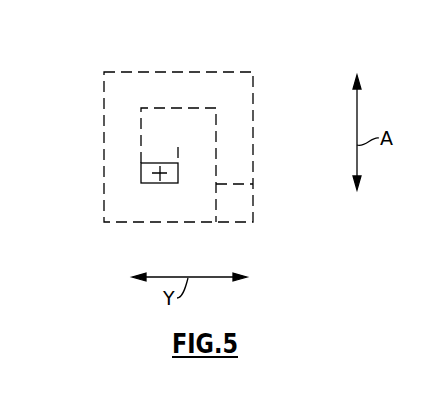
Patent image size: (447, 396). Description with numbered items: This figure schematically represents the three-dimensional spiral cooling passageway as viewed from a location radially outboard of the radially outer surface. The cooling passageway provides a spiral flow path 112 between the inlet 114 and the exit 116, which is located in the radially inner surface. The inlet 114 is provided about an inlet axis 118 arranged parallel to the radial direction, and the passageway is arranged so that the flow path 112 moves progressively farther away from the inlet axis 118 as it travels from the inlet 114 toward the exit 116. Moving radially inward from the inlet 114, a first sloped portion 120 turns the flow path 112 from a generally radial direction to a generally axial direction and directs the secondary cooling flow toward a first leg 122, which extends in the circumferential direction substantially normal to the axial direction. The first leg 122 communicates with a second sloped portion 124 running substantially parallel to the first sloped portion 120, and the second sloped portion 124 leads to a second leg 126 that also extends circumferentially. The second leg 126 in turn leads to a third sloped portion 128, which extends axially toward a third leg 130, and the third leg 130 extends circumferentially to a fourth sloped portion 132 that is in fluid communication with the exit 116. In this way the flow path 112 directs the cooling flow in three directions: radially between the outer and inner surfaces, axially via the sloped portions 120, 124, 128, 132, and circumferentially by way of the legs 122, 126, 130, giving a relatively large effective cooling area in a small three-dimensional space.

The flow path 112 is at (157, 108).
The inlet 114 is at (161, 184).
The exit 116 is at (263, 197).
The inlet axis 118 is at (162, 183).
The first sloped portion 120 is at (160, 138).
The first leg 122 is at (201, 120).
The second sloped portion 124 is at (200, 150).
The second leg 126 is at (178, 197).
The third sloped portion 128 is at (118, 140).
The third leg 130 is at (155, 85).
The fourth sloped portion 132 is at (243, 112).